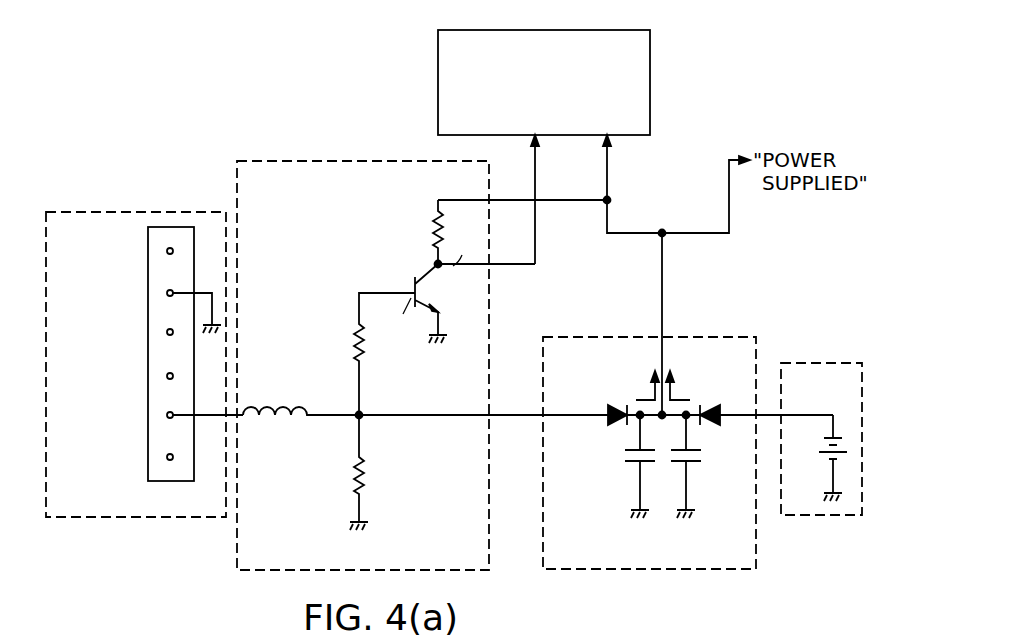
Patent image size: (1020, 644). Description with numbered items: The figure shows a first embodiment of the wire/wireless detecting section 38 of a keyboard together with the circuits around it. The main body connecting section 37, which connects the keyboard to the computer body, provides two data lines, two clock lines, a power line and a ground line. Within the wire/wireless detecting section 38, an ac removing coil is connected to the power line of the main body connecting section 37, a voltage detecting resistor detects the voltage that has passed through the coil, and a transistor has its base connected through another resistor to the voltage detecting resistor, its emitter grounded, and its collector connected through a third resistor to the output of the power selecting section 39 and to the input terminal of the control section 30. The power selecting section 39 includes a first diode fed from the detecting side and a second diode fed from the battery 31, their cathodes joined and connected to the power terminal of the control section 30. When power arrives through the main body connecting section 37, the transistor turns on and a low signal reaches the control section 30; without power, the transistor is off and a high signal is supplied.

The control section 30 is at (613, 30).
The battery 31 is at (822, 363).
The main body connecting section 37 is at (145, 212).
The wire/wireless detecting section 38 is at (320, 161).
The power selecting section 39 is at (705, 337).